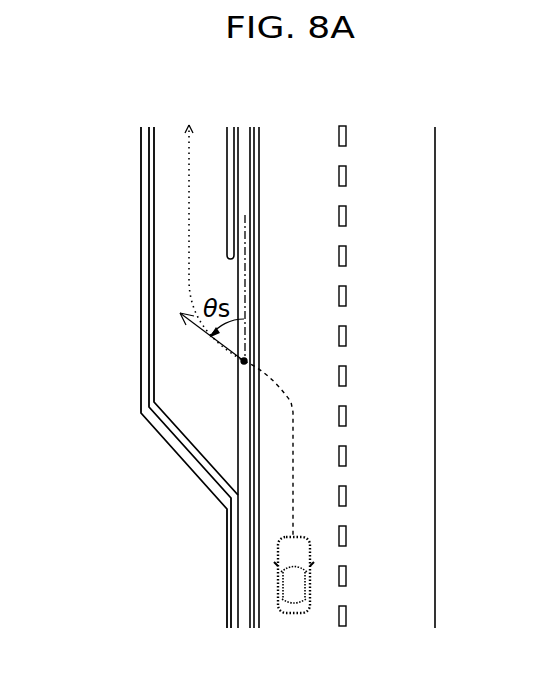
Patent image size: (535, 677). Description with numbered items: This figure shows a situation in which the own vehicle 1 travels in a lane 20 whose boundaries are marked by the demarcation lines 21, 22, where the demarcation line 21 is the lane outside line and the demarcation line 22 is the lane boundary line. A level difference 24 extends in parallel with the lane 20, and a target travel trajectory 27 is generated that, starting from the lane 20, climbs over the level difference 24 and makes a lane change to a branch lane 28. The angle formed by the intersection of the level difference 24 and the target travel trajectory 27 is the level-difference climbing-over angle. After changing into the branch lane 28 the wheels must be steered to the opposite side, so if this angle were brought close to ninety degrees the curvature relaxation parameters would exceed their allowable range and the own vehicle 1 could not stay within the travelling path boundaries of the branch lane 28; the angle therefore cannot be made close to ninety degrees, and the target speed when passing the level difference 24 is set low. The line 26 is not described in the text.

The own vehicle 1 is at (296, 614).
The lane 20 is at (303, 128).
The demarcation line 21 is at (268, 130).
The demarcation line 22 is at (346, 207).
The level difference 24 is at (242, 437).
The reference line 26 is at (245, 258).
The target travel trajectory 27 is at (290, 405).
The branch lane 28 is at (162, 224).